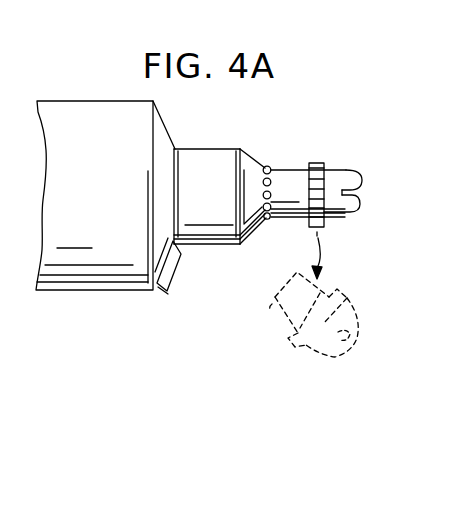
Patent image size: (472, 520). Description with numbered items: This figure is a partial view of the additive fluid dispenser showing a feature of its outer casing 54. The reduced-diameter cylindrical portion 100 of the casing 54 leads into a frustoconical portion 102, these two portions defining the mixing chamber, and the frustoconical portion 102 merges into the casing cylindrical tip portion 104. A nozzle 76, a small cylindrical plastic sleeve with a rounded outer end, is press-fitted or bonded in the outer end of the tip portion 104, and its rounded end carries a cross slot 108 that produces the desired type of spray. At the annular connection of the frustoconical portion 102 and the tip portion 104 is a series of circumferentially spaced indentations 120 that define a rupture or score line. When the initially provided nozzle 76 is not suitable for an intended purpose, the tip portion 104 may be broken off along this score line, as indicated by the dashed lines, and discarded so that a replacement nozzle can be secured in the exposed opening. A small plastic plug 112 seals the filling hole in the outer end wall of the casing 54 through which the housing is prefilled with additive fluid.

The outer casing 54 is at (72, 292).
The reduced-diameter cylindrical portion 100 is at (193, 148).
The frustoconical portion 102 is at (248, 150).
The circumferentially spaced indentations 120 is at (257, 164).
The casing cylindrical tip portion 104 is at (299, 170).
The nozzle 76 is at (348, 170).
The cross slot 108 is at (358, 194).
The plastic plug 112 is at (177, 292).